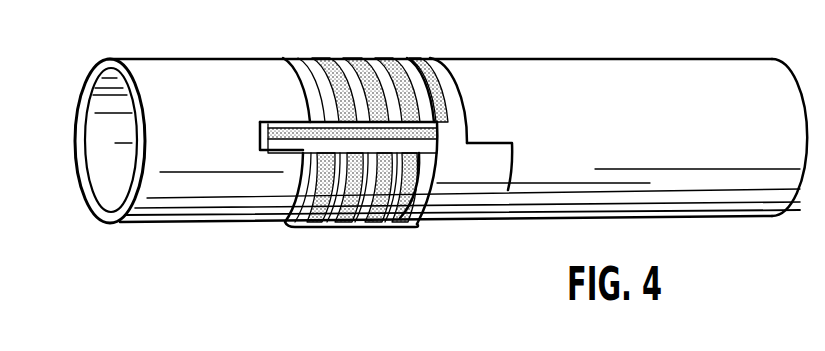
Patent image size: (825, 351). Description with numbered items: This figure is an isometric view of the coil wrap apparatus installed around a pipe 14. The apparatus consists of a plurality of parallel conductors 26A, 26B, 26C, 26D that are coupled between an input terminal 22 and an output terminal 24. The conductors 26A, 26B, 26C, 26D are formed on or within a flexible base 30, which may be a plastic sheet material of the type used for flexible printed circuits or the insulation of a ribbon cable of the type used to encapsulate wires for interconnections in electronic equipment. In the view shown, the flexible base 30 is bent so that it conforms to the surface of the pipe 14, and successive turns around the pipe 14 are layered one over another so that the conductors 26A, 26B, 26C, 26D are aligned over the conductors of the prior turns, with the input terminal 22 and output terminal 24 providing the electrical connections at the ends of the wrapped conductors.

The pipe 14 is at (678, 78).
The input terminal 22 is at (258, 130).
The output terminal 24 is at (508, 190).
The parallel conductor 26A is at (302, 227).
The parallel conductor 26B is at (333, 225).
The parallel conductor 26C is at (357, 225).
The parallel conductor 26D is at (390, 228).
The flexible base 30 is at (300, 58).